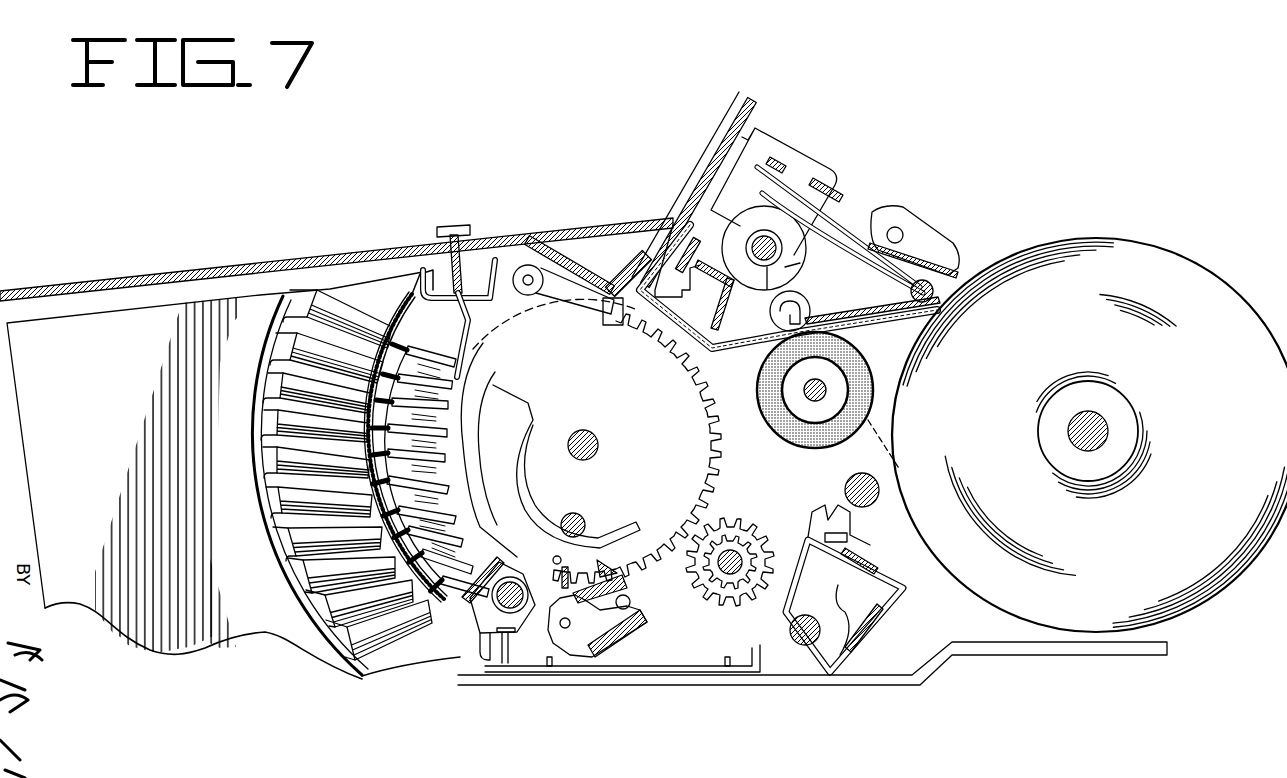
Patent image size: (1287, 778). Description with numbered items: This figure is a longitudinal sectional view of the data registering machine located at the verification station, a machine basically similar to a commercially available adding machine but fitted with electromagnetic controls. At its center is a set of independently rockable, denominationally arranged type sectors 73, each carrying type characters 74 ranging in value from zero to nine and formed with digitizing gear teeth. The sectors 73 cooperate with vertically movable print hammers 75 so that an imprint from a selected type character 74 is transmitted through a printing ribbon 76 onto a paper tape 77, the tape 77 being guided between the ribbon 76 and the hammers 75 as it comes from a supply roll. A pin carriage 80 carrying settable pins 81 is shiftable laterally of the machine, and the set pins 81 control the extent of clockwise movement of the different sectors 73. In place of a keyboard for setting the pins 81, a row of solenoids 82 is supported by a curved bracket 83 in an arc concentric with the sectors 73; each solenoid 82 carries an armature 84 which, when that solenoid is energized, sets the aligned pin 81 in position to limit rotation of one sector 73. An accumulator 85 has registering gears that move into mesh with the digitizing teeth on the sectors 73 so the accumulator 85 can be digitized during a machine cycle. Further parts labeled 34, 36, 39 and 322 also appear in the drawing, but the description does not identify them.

The bracket 34 is at (462, 248).
The link 36 is at (528, 243).
The segment ring 39 is at (427, 270).
The type sectors 73 is at (703, 455).
The type characters 74 is at (502, 328).
The print hammers 75 is at (765, 140).
The printing ribbon 76 is at (653, 320).
The paper tape 77 is at (710, 152).
The pin carriage 80 is at (445, 443).
The settable pins 81 is at (432, 514).
The solenoids 82 is at (288, 562).
The curved bracket 83 is at (365, 283).
The armature 84 is at (300, 348).
The accumulator 85 is at (713, 627).
The support block 322 is at (473, 640).